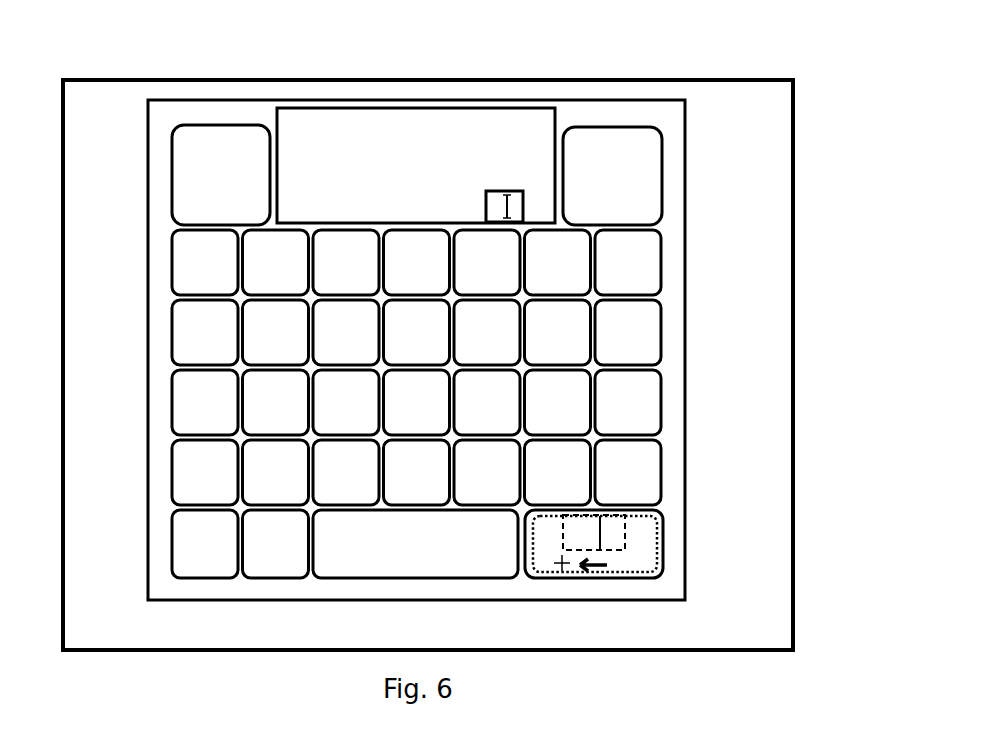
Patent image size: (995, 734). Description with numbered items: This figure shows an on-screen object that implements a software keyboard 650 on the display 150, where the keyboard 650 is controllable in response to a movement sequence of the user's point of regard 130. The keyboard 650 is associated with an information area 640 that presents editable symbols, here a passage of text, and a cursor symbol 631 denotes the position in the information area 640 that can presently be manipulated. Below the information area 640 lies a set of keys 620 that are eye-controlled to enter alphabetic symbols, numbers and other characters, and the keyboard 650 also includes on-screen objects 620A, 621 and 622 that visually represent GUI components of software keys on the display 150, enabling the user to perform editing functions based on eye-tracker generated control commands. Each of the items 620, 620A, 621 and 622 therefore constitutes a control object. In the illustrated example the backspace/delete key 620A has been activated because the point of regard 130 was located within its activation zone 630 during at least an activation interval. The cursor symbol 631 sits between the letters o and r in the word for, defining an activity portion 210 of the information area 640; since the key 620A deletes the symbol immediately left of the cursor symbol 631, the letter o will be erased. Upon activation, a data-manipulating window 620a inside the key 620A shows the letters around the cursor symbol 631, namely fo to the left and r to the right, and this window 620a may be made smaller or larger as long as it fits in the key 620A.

The display 150 is at (796, 64).
The software keyboard 650 is at (456, 348).
The on-screen object 621 is at (214, 133).
The on-screen object 622 is at (630, 133).
The information area 640 is at (446, 132).
The activity portion 210 is at (463, 131).
The cursor symbol 631 is at (559, 129).
The set of keys 620 is at (424, 438).
The backspace/delete key 620A is at (663, 557).
The activation zone 630 is at (645, 520).
The data-manipulating window 620a is at (668, 528).
The point of regard 130 is at (618, 600).